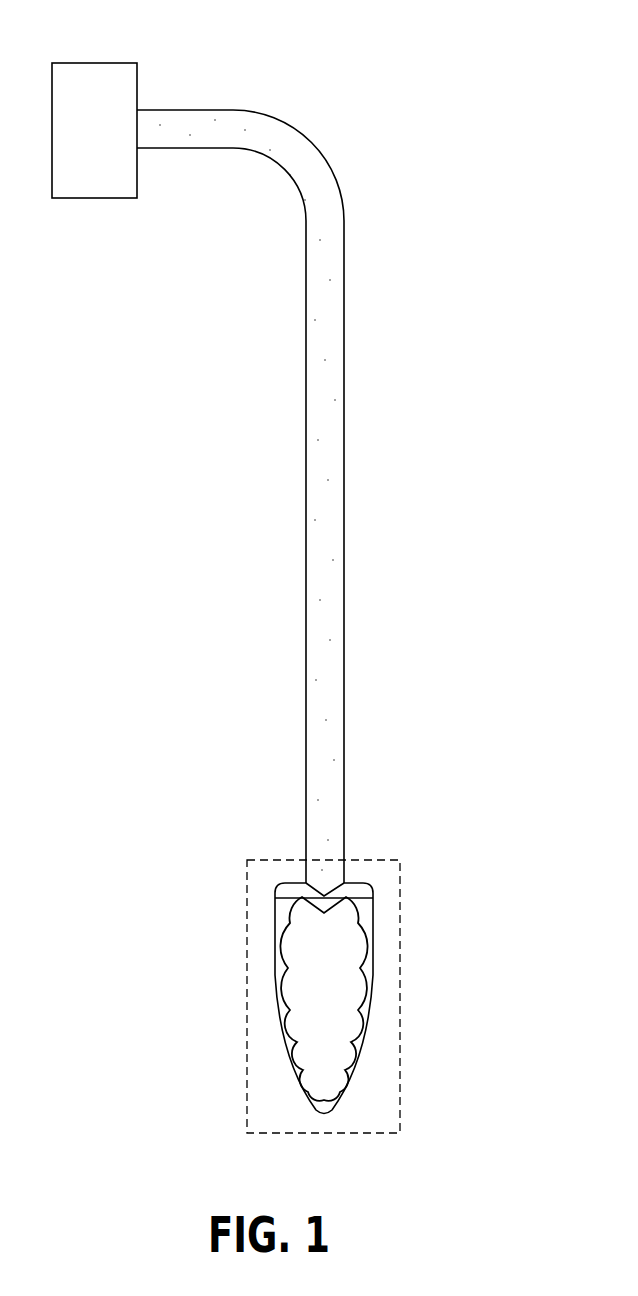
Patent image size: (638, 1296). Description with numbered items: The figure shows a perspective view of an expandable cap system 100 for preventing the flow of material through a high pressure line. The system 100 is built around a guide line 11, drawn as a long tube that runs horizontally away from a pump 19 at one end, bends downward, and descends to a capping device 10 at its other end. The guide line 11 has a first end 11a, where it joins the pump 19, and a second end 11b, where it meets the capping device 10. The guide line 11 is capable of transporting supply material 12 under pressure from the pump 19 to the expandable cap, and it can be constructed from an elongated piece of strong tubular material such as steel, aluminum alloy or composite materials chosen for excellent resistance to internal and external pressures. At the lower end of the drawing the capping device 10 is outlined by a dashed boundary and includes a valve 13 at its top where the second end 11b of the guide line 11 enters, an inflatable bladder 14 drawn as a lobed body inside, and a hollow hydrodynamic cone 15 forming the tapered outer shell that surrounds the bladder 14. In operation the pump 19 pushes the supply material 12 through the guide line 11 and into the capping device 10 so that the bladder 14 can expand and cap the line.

The expandable cap system 100 is at (381, 111).
The pump 19 is at (107, 146).
The guide line 11 is at (345, 305).
The first end 11a is at (137, 127).
The second end 11b is at (320, 880).
The supply material 12 is at (323, 532).
The capping device 10 is at (247, 943).
The valve 13 is at (350, 890).
The inflatable bladder 14 is at (312, 1029).
The hollow hydrodynamic cone 15 is at (373, 968).